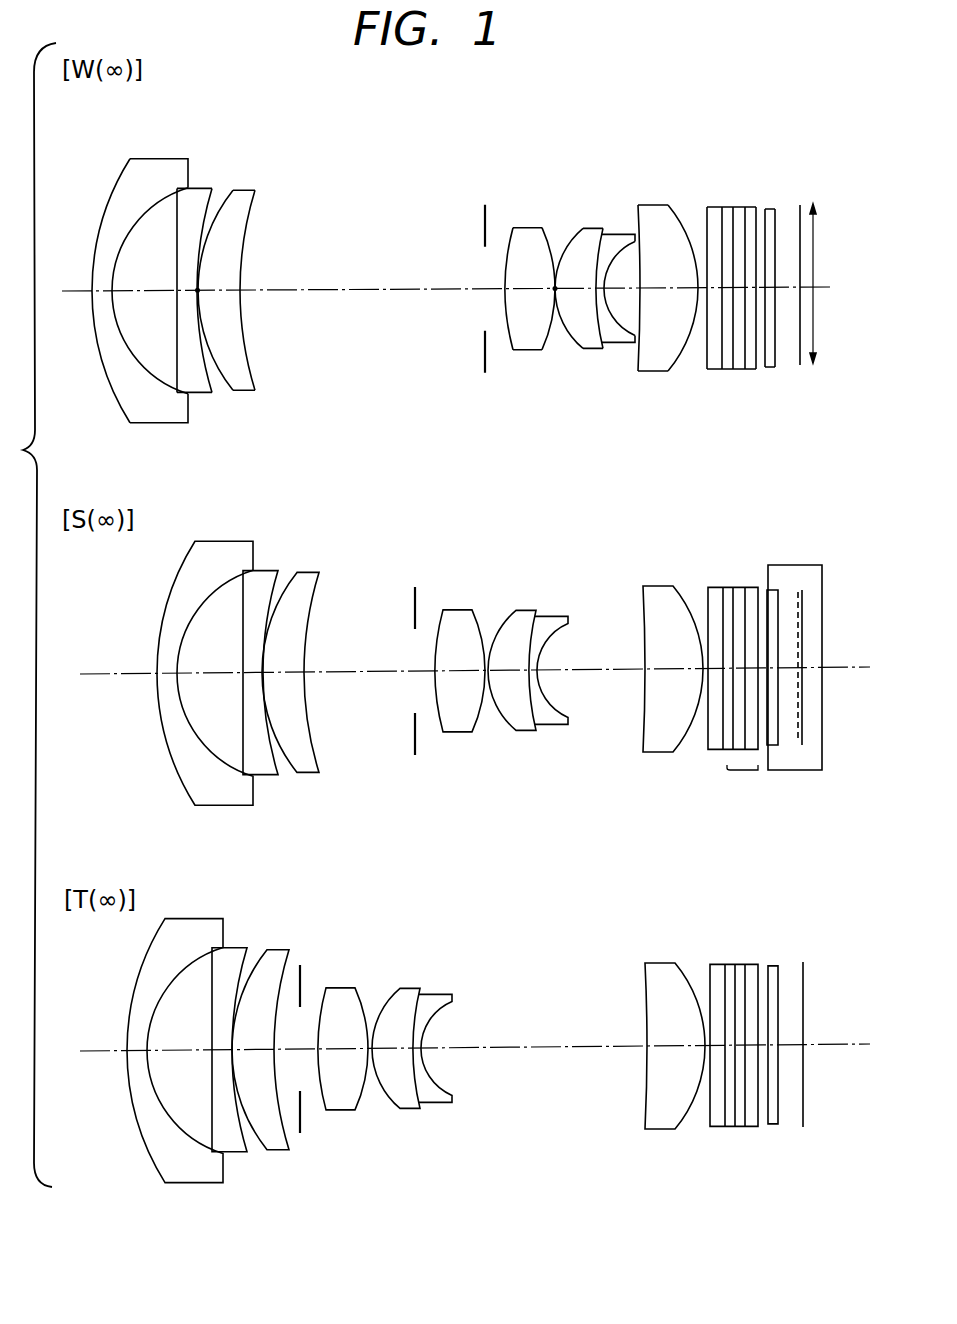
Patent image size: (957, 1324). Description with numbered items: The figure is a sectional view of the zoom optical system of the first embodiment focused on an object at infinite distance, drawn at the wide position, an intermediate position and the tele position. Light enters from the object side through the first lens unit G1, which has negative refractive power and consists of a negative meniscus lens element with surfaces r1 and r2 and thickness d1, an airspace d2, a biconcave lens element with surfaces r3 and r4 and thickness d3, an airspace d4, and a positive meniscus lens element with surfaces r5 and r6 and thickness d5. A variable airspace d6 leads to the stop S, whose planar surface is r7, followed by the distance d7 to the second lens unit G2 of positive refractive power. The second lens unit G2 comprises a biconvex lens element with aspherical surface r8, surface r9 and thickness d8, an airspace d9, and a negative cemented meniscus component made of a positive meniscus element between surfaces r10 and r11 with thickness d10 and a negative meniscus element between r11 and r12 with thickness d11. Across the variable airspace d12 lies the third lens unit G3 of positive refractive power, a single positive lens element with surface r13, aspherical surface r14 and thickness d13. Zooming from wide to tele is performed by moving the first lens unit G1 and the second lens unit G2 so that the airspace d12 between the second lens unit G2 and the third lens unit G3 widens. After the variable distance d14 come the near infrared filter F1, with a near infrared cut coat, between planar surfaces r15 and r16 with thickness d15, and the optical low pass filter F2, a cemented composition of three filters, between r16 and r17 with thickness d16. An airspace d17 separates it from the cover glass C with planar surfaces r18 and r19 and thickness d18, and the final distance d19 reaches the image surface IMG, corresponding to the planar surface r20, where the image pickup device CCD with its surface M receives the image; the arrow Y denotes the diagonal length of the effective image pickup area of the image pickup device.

The radius of curvature of first lens surface r1 is at (115, 184).
The radius of curvature of second lens surface r2 is at (152, 204).
The radius of curvature of third lens surface r3 is at (188, 200).
The radius of curvature of fourth lens surface r4 is at (212, 207).
The radius of curvature of fifth lens surface r5 is at (233, 194).
The radius of curvature of sixth lens surface r6 is at (255, 200).
The stop surface r7 is at (483, 219).
The radius of curvature of eighth lens surface r8 is at (502, 234).
The radius of curvature of ninth lens surface r9 is at (554, 268).
The radius of curvature of tenth lens surface r10 is at (573, 233).
The radius of curvature of eleventh lens surface r11 is at (598, 234).
The radius of curvature of twelfth lens surface r12 is at (620, 233).
The radius of curvature of thirteenth lens surface r13 is at (630, 200).
The radius of curvature of fourteenth lens surface r14 is at (688, 244).
The radius of curvature of fifteenth surface r15 is at (697, 205).
The radius of curvature of sixteenth surface r16 is at (722, 205).
The radius of curvature of seventeenth surface r17 is at (754, 205).
The radius of curvature of eighteenth surface r18 is at (767, 207).
The radius of curvature of nineteenth surface r19 is at (776, 207).
The image surface r20 is at (802, 204).
The thickness of first lens element d1 is at (108, 291).
The airspace after first lens element d2 is at (140, 293).
The thickness of biconcave lens element d3 is at (191, 380).
The airspace after biconcave lens element d4 is at (203, 290).
The thickness of positive meniscus lens element d5 is at (225, 296).
The variable airspace D1 d6 is at (357, 297).
The airspace after stop d7 is at (497, 289).
The thickness of biconvex lens element d8 is at (522, 300).
The airspace after biconvex lens element d9 is at (556, 292).
The thickness of positive meniscus lens element of cemented component d10 is at (583, 292).
The thickness of negative meniscus lens element of cemented component d11 is at (607, 338).
The variable airspace D2 d12 is at (633, 284).
The thickness of third lens unit element d13 is at (653, 297).
The variable airspace D3 d14 is at (697, 300).
The thickness of near infrared filter d15 is at (715, 369).
The thickness of optical low pass filter d16 is at (750, 369).
The airspace after low pass filter d17 is at (760, 369).
The thickness of cover glass d18 is at (770, 369).
The airspace to image surface d19 is at (789, 291).
The first lens unit G1 is at (330, 813).
The second lens unit G2 is at (573, 756).
The third lens unit G3 is at (658, 752).
The stop S is at (414, 758).
The near infrared filter F1 is at (718, 750).
The optical low pass filter F2 is at (742, 786).
The cover glass C is at (765, 592).
The micro lens / sensor surface M is at (802, 728).
The image pickup device CCD is at (812, 772).
The image IMG is at (799, 590).
The diagonal length of effective image pickup area Y is at (821, 283).